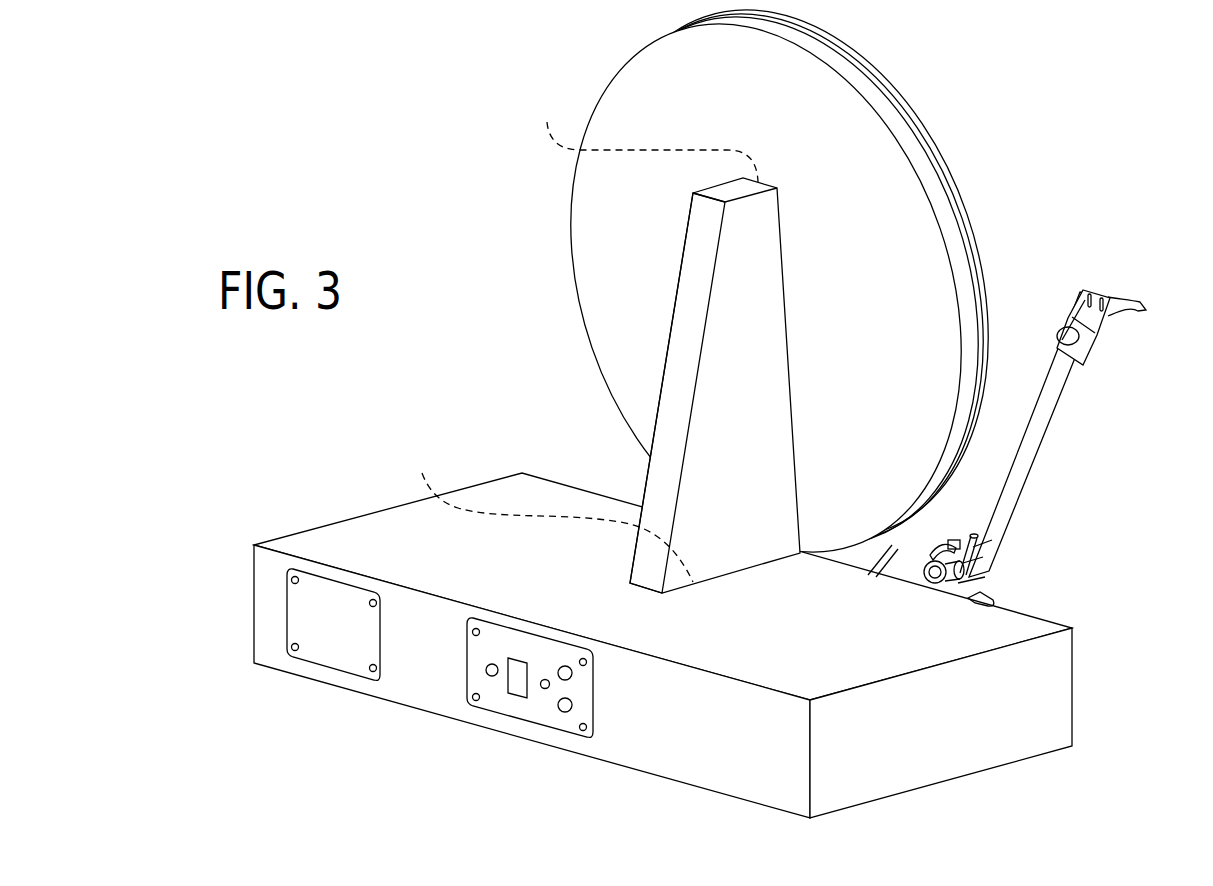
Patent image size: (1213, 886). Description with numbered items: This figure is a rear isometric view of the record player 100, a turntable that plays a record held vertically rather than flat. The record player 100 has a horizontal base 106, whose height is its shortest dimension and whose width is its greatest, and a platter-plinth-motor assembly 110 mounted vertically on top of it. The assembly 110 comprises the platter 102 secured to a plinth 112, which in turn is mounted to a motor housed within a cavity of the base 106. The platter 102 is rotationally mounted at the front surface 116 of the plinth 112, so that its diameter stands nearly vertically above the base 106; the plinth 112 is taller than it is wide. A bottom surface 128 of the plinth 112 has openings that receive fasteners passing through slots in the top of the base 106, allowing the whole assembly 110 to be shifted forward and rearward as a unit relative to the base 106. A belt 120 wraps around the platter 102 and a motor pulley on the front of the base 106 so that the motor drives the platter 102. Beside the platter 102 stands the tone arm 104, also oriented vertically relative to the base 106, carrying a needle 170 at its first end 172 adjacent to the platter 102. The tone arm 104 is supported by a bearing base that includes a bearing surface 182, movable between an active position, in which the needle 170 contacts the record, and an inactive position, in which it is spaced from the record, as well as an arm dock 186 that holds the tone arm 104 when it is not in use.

The record player 100 is at (722, 409).
The platter 102 is at (838, 235).
The tone arm 104 is at (1074, 407).
The base 106 is at (670, 735).
The platter-plinth-motor assembly 110 is at (646, 385).
The plinth 112 is at (665, 462).
The front surface of the plinth 116 is at (643, 136).
The belt 120 is at (887, 560).
The bottom surface of the plinth 128 is at (548, 514).
The needle 170 is at (1123, 287).
The first end of the tone arm 172 is at (1088, 290).
The bearing surface 182 is at (942, 540).
The arm dock 186 is at (983, 545).